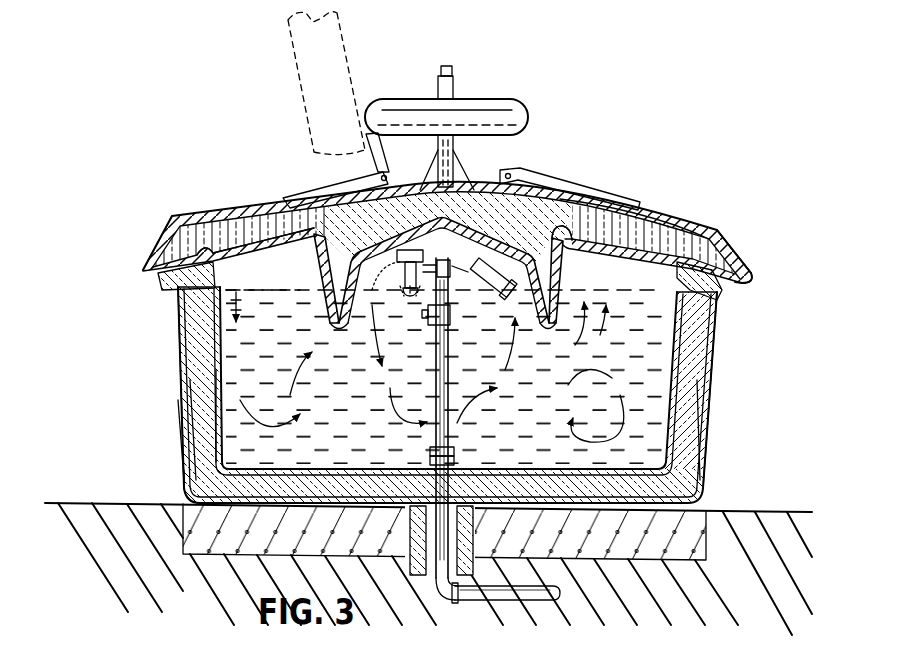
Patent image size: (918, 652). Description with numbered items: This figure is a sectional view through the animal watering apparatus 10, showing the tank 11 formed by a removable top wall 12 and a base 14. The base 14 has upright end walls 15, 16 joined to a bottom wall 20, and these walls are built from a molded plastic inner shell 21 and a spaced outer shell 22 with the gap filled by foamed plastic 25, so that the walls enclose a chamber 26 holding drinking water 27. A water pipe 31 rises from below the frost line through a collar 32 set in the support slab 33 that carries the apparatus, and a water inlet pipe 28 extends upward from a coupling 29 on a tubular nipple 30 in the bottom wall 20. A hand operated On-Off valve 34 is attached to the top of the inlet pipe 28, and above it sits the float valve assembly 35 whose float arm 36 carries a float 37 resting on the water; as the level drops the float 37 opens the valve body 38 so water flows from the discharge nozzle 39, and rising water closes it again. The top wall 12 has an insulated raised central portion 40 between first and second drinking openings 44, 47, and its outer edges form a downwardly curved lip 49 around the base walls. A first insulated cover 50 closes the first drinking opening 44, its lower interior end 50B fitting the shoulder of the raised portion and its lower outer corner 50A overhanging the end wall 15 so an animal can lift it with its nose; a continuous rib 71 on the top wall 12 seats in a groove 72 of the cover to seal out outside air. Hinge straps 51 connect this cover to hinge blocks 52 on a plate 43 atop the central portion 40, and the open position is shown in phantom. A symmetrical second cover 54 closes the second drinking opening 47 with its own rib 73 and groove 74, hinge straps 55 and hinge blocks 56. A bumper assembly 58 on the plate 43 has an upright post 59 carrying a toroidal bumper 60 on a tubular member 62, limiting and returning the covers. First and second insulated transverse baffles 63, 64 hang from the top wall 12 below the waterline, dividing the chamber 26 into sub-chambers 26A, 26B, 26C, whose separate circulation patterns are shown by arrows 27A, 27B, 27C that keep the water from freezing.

The animal watering apparatus 10 is at (752, 222).
The tank 11 is at (170, 398).
The top wall 12 is at (512, 160).
The base 14 is at (712, 417).
The first end wall 15 is at (184, 436).
The second end wall 16 is at (705, 350).
The bottom wall 20 is at (362, 469).
The inner shell 21 is at (222, 380).
The outer shell 22 is at (180, 351).
The foamed plastic 25 is at (208, 343).
The chamber 26 is at (350, 400).
The first sub-chamber 26A is at (263, 288).
The second sub-chamber 26B is at (496, 334).
The third sub-chamber 26C is at (619, 310).
The drinking water 27 is at (267, 263).
The circulation arrows 27A is at (271, 407).
The circulation arrows 27B is at (403, 364).
The circulation arrows 27C is at (599, 405).
The water inlet pipe 28 is at (450, 394).
The coupling 29 is at (454, 448).
The tubular nipple 30 is at (454, 465).
The water pipe 31 is at (528, 603).
The collar 32 is at (473, 540).
The support slab 33 is at (690, 537).
The hand operated On-Off valve 34 is at (437, 334).
The float valve assembly 35 is at (437, 250).
The float arm 36 is at (451, 324).
The float 37 is at (495, 266).
The valve body 38 is at (410, 246).
The discharge nozzle 39 is at (398, 270).
The raised central portion 40 is at (477, 187).
The plate 43 is at (520, 180).
The first drinking opening 44 is at (235, 278).
The second drinking opening 47 is at (655, 221).
The downwardly curved lip 49 is at (165, 288).
The first insulated cover 50 is at (300, 62).
The lower outer corner 50A is at (143, 268).
The lower interior end 50B is at (345, 228).
The hinge straps 51 is at (320, 193).
The hinge blocks 52 is at (390, 182).
The second insulated cover 54 is at (700, 225).
The hinge straps 55 is at (585, 196).
The hinge blocks 56 is at (500, 178).
The bumper assembly 58 is at (472, 112).
The upright post 59 is at (447, 72).
The toroidal bumper 60 is at (405, 100).
The tubular member 62 is at (455, 90).
The first insulated transverse baffle 63 is at (330, 343).
The second insulated transverse baffle 64 is at (579, 324).
The continuous rib 71 is at (326, 258).
The groove 72 is at (205, 252).
The continuous rib 73 is at (560, 285).
The groove 74 is at (576, 238).